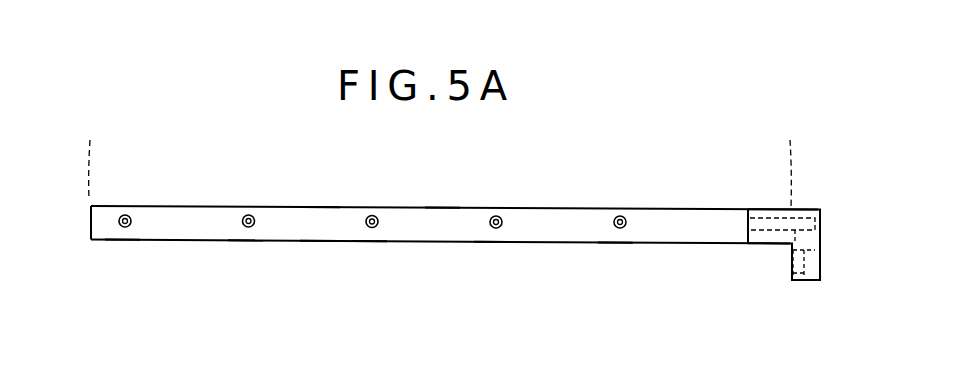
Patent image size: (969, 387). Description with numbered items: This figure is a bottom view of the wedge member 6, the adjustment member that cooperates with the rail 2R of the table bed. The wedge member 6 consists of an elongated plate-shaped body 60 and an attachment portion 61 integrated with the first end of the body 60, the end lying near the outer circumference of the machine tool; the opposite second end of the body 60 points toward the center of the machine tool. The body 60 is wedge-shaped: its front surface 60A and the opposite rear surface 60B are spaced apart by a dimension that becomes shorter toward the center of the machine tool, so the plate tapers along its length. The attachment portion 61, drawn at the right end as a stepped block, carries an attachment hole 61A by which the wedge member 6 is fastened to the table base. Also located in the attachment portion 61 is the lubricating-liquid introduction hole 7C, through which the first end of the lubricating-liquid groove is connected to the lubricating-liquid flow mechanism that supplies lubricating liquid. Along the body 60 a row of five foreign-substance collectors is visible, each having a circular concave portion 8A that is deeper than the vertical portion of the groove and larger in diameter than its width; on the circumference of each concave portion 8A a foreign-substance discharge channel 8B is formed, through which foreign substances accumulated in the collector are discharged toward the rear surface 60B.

The wedge member 6 is at (680, 138).
The rail 2R is at (442, 207).
The body 60 is at (553, 232).
The front surface 60A is at (325, 206).
The rear surface 60B is at (317, 243).
The concave portion 8A is at (125, 213).
The foreign-substance discharge channel 8B is at (119, 223).
The attachment portion 61 is at (795, 282).
The attachment hole 61A is at (790, 263).
The lubricating-liquid introduction hole 7C is at (800, 213).